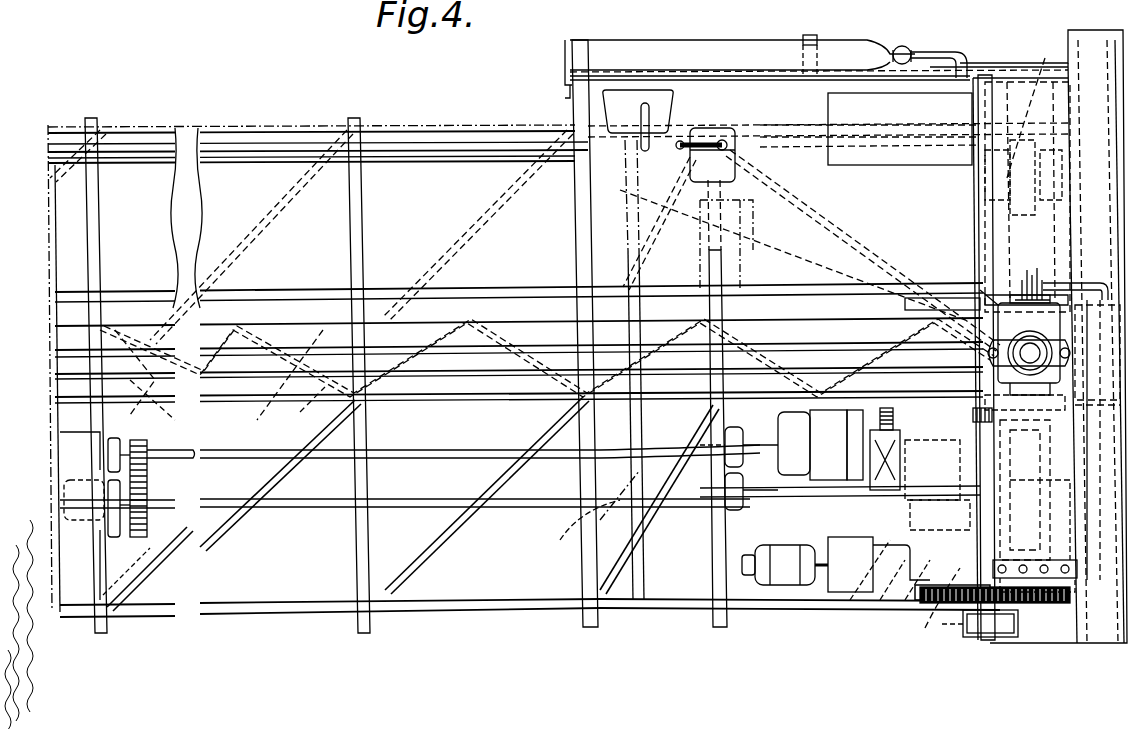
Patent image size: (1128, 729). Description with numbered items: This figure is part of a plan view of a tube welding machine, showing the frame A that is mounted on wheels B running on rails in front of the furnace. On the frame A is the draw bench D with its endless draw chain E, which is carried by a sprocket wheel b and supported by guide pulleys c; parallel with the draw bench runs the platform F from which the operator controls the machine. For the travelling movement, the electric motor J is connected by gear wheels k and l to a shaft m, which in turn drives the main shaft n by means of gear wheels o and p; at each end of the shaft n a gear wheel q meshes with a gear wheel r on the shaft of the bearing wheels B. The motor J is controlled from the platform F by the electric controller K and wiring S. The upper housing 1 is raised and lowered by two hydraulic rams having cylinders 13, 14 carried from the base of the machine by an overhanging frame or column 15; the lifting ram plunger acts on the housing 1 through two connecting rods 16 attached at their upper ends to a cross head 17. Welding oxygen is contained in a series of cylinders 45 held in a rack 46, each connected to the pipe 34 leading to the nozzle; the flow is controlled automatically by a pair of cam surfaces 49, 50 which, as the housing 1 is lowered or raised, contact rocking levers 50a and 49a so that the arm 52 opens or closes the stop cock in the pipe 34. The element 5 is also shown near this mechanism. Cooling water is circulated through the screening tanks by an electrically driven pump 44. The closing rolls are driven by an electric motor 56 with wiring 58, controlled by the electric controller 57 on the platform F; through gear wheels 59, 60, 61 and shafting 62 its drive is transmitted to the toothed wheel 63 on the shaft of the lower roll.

The frame A is at (290, 150).
The platform F is at (591, 336).
The draw bench D is at (245, 335).
The endless draw chain E is at (480, 357).
The guide pulleys c is at (227, 404).
The sprocket wheel b is at (810, 250).
The bottles or cylinders 45 is at (721, 54).
The rack 46 is at (590, 44).
The electric controller 57 is at (638, 120).
The electric controller K is at (738, 128).
The wiring S is at (745, 252).
The pipe 34 is at (968, 180).
The wheels B is at (991, 340).
The cam surface 50 is at (1029, 349).
The arm 52 is at (1040, 265).
The rocking lever 49a is at (1030, 273).
The cam surface 49 is at (988, 282).
The cylinder 14 is at (990, 298).
The cylinder 13 is at (982, 305).
The rocking lever 50a is at (1030, 280).
The cross head 17 is at (1063, 288).
The tube 5 is at (1109, 298).
The upper housing 1 is at (1097, 355).
The connecting rods 16 is at (1013, 352).
The gear wheel 61 is at (970, 410).
The toothed wheel 63 is at (1052, 426).
The electric motor J is at (781, 460).
The gear wheel l is at (875, 422).
The gear wheel k is at (850, 488).
The electrically driven pump 44 is at (836, 564).
The electric motor 56 is at (880, 583).
The gear wheel q is at (885, 595).
The gear wheel r is at (912, 597).
The gear wheel 59 is at (928, 605).
The shafting 62 is at (960, 600).
The gear wheel 60 is at (980, 635).
The overhanging frame or column 15 is at (1067, 540).
The shaft m is at (482, 456).
The main shaft n is at (335, 510).
The gear wheel o is at (147, 440).
The gear wheel p is at (151, 536).
The wiring 58 is at (595, 523).